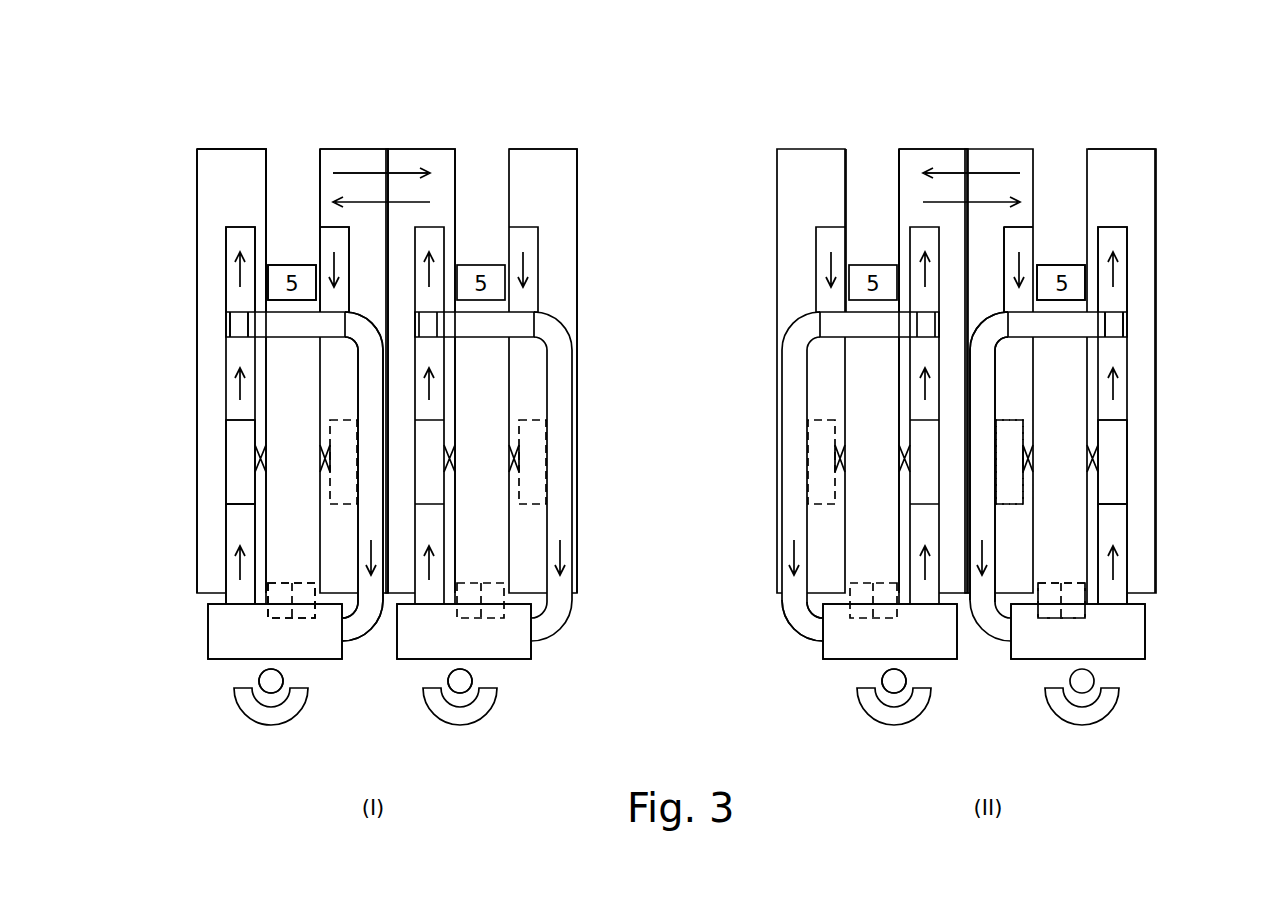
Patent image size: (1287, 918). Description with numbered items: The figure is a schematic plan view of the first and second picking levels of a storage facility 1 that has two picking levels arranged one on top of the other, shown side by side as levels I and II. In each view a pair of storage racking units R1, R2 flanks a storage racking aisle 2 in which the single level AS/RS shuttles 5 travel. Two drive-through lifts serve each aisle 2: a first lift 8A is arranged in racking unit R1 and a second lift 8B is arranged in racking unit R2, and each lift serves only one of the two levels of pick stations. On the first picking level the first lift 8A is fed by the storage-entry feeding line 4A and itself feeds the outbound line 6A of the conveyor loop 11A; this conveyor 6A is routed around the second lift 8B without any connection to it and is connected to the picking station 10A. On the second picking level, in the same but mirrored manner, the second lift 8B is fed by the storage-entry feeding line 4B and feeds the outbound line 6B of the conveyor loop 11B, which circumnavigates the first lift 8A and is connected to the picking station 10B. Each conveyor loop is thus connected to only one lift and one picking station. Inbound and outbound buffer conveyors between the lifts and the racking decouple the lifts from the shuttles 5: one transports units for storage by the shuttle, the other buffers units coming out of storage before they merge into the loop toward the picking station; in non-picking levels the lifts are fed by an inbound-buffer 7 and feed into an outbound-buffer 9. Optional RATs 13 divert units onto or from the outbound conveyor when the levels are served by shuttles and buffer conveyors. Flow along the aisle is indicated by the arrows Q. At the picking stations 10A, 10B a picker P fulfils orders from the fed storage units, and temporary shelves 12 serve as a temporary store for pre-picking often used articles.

The storage facility 1 is at (236, 108).
The storage racking aisle 2 is at (298, 180).
The single level AS/RS 5 is at (676, 282).
The inbound-buffer 7 is at (1113, 238).
The outbound-buffer 9 is at (1027, 243).
The temporary shelves 12 is at (268, 592).
The RAT 13 is at (237, 322).
The storage-entry feeding line 4A is at (235, 516).
The storage-entry feeding line 4B is at (1113, 525).
The outbound line 6A is at (368, 365).
The outbound line 6B is at (977, 407).
The first lift 8A is at (235, 458).
The second lift 8B is at (1113, 472).
The picking station 10A is at (222, 643).
The picking station 10B is at (1127, 637).
The conveyor loop 11A is at (366, 657).
The conveyor loop 11B is at (793, 651).
The picker P is at (271, 727).
The flow Q is at (366, 170).
The racking unit R1 is at (210, 160).
The racking unit R2 is at (323, 160).